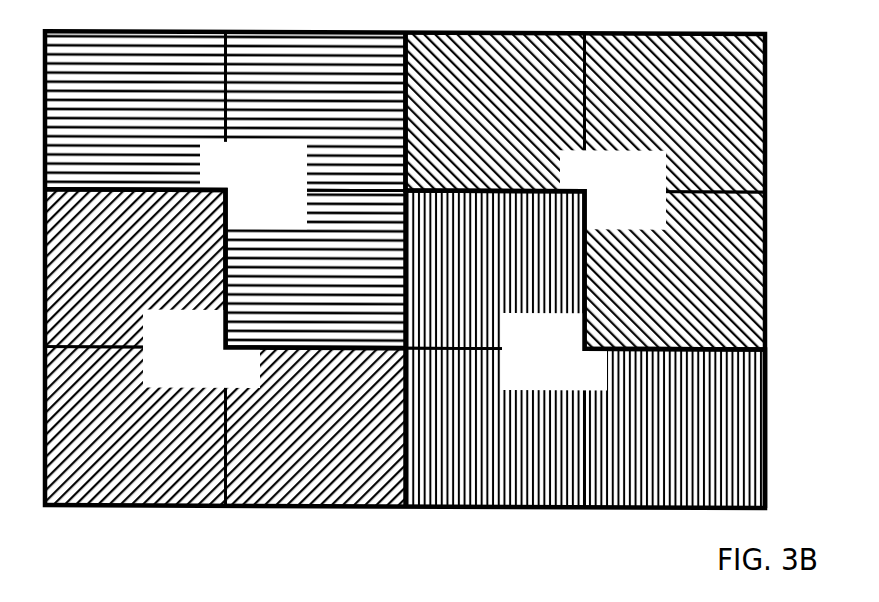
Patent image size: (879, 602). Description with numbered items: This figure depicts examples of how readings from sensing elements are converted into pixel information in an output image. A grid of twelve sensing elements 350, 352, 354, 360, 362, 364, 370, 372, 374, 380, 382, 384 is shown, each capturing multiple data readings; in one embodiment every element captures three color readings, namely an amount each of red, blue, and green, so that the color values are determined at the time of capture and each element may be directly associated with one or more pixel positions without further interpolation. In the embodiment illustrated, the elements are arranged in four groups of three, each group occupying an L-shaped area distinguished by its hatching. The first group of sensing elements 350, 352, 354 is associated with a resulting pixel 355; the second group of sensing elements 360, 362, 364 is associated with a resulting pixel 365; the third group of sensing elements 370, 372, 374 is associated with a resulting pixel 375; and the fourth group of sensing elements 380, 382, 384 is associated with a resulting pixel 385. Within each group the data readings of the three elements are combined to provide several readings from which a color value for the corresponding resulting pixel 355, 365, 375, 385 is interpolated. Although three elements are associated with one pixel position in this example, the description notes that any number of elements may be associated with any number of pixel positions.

The sensing element 350 is at (118, 123).
The sensing element 352 is at (299, 123).
The sensing element 354 is at (299, 278).
The resulting pixel 355 is at (246, 201).
The sensing element 360 is at (118, 278).
The sensing element 362 is at (118, 434).
The sensing element 364 is at (298, 434).
The resulting pixel 365 is at (161, 357).
The sensing element 370 is at (479, 123).
The sensing element 372 is at (658, 122).
The sensing element 374 is at (658, 277).
The resulting pixel 375 is at (603, 201).
The sensing element 380 is at (479, 278).
The sensing element 382 is at (478, 437).
The sensing element 384 is at (658, 436).
The resulting pixel 385 is at (520, 361).